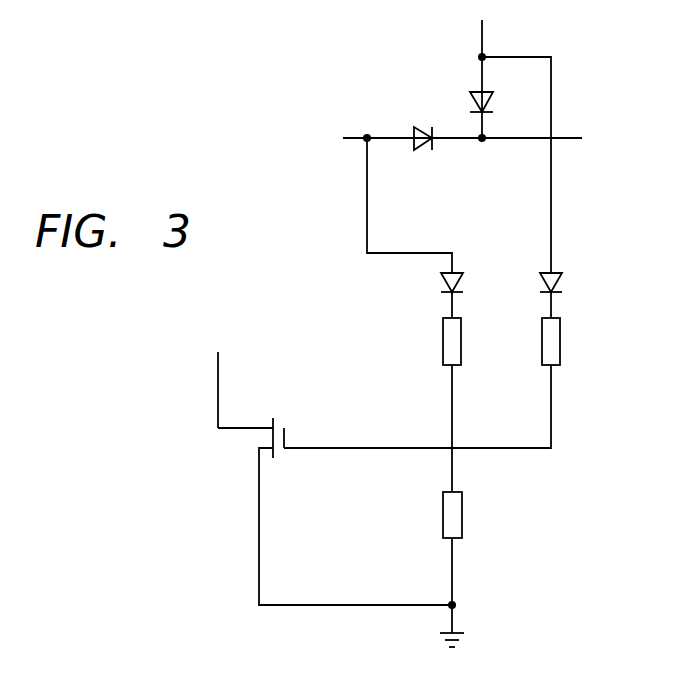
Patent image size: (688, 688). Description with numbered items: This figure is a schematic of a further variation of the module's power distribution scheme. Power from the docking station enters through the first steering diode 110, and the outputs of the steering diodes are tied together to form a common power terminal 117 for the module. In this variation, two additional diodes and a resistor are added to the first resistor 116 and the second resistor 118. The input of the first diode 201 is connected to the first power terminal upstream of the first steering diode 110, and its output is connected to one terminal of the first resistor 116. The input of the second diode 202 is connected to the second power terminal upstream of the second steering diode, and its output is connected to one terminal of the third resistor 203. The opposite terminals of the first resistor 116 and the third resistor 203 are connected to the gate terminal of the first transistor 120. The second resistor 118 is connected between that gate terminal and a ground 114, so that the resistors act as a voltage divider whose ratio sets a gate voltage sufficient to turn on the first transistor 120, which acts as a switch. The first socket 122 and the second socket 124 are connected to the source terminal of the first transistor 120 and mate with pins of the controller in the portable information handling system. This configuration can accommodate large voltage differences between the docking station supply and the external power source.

The first steering diode 110 is at (423, 122).
The common power terminal 117 is at (497, 104).
The first diode 201 is at (468, 284).
The second diode 202 is at (567, 284).
The first resistor 116 is at (469, 341).
The third resistor 203 is at (568, 341).
The second resistor 118 is at (469, 515).
The first transistor 120 is at (355, 499).
The first socket 122 is at (218, 378).
The second socket 124 is at (230, 429).
The ground 114 is at (467, 641).